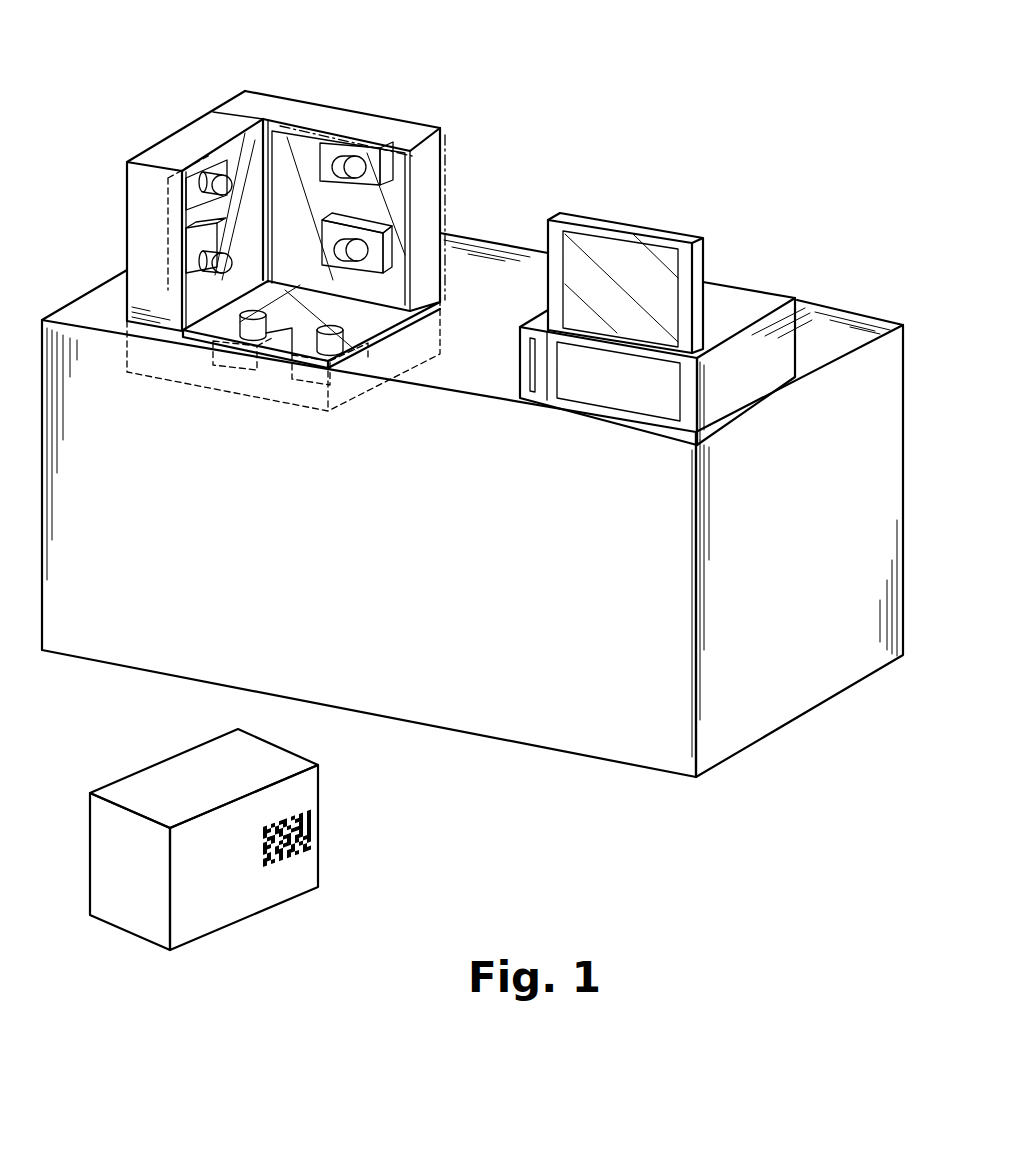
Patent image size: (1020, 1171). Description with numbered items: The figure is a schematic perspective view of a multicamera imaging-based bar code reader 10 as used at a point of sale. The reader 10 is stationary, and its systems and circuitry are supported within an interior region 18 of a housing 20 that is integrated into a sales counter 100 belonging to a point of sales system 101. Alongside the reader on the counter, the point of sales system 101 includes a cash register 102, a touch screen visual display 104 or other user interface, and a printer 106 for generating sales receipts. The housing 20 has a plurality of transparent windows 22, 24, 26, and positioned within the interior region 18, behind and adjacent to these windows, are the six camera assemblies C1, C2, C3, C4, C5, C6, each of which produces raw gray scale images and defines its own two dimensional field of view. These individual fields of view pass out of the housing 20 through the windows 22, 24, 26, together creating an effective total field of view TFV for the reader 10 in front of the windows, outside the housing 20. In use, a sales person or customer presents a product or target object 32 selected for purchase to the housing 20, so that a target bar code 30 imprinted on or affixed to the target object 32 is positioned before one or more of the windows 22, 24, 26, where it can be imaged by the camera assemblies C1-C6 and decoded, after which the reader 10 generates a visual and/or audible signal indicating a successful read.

The multicamera imaging-based bar code reader 10 is at (316, 82).
The interior region 18 is at (376, 358).
The housing 20 is at (455, 196).
The transparent window 22 is at (350, 324).
The transparent window 24 is at (372, 213).
The transparent window 26 is at (233, 160).
The target bar code 30 is at (310, 827).
The target object 32 is at (320, 866).
The sales counter 100 is at (518, 236).
The point of sales system 101 is at (598, 112).
The cash register 102 is at (732, 370).
The touch screen visual display 104 is at (653, 229).
The printer 106 is at (520, 368).
The camera assembly C1 is at (216, 352).
The camera assembly C2 is at (306, 360).
The camera assembly C3 is at (378, 172).
The camera assembly C4 is at (370, 262).
The camera assembly C5 is at (190, 190).
The camera assembly C6 is at (208, 246).
The total field of view TFV is at (334, 110).